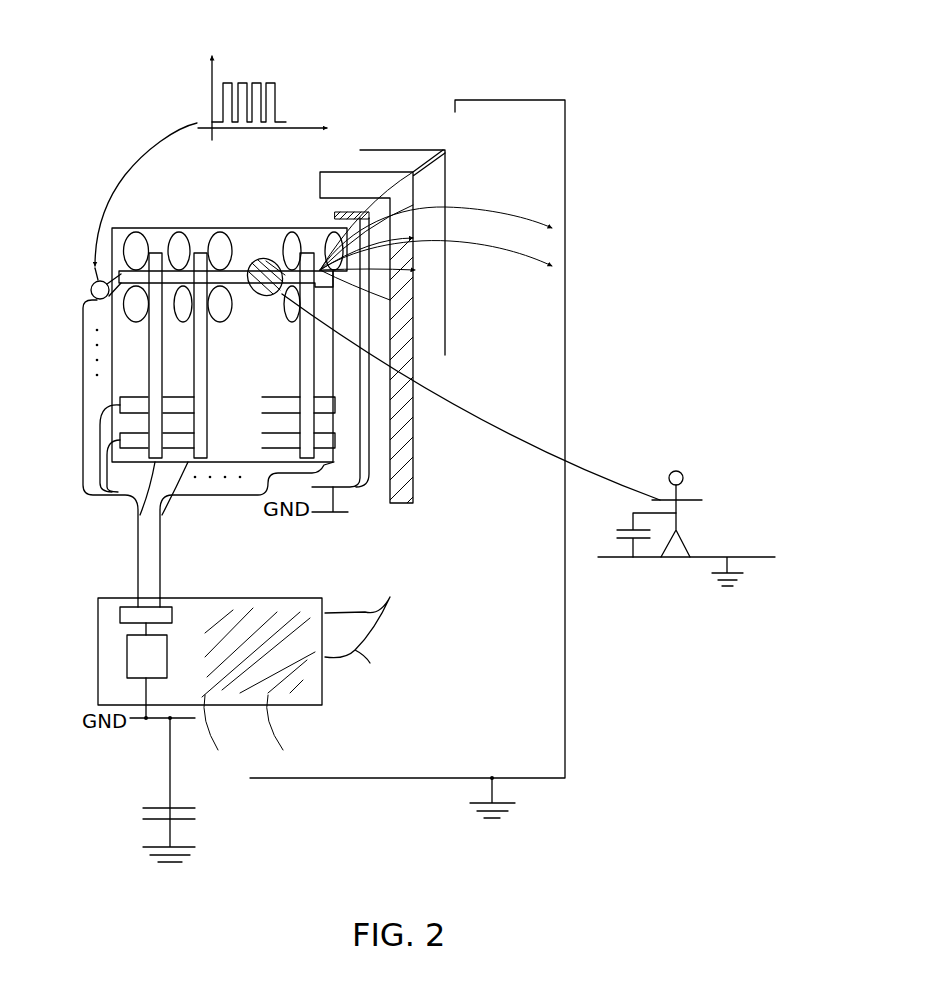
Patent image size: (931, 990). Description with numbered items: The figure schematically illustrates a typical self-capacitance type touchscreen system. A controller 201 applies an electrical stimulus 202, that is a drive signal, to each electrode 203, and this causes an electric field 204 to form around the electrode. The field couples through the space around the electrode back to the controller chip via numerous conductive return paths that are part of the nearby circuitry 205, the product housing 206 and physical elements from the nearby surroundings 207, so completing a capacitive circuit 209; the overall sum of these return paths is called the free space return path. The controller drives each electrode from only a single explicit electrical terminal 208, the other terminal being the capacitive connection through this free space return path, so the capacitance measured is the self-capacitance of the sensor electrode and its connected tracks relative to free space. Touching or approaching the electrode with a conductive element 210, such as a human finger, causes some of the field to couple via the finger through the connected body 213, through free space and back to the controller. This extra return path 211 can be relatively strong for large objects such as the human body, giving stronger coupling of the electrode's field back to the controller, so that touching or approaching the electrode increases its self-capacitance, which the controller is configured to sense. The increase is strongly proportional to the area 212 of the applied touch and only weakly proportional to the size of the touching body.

The controller 201 is at (125, 656).
The electrical stimulus 202 is at (270, 64).
The electrode 203 is at (312, 257).
The electric field 204 is at (128, 248).
The nearby circuitry 205 is at (398, 173).
The product housing 206 is at (437, 194).
The physical elements from the nearby surroundings 207 is at (547, 398).
The explicit electrical terminal 208 is at (93, 300).
The capacitive circuit 209 is at (257, 657).
The conductive element 210 is at (282, 312).
The extra return path 211 is at (625, 545).
The area of the applied touch 212 is at (258, 297).
The connected body 213 is at (686, 492).